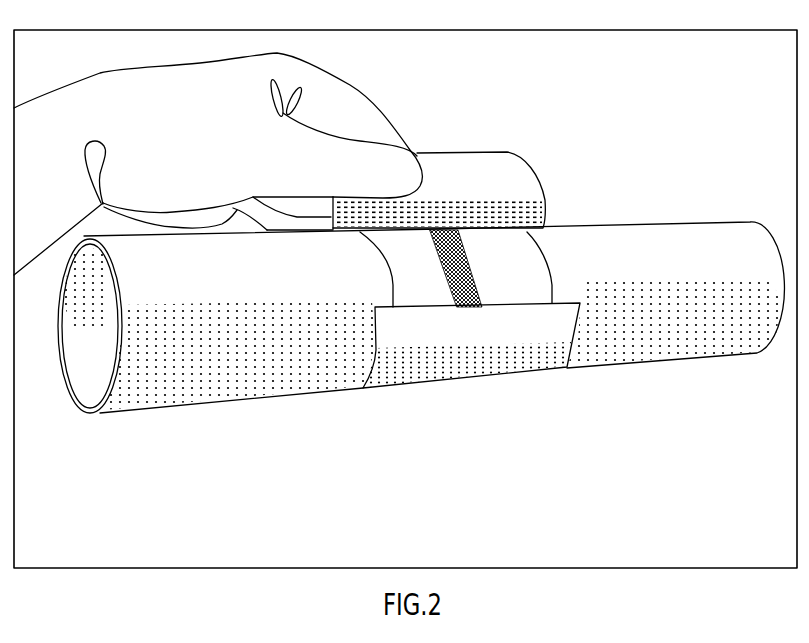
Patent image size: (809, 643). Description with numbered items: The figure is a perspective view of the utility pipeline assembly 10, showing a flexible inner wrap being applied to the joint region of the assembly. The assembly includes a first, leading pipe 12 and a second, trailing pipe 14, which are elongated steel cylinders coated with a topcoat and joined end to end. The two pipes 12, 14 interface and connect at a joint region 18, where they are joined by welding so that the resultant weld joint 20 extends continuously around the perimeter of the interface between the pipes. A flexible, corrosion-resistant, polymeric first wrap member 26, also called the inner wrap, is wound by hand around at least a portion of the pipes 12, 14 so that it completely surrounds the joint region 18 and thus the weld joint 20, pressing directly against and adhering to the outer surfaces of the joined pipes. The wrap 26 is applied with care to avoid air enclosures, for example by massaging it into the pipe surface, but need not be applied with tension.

The utility pipeline assembly 10 is at (630, 125).
The first pipe 12 is at (218, 407).
The second pipe 14 is at (647, 362).
The joint region 18 is at (521, 198).
The weld joint 20 is at (477, 272).
The first wrap member 26 is at (482, 152).